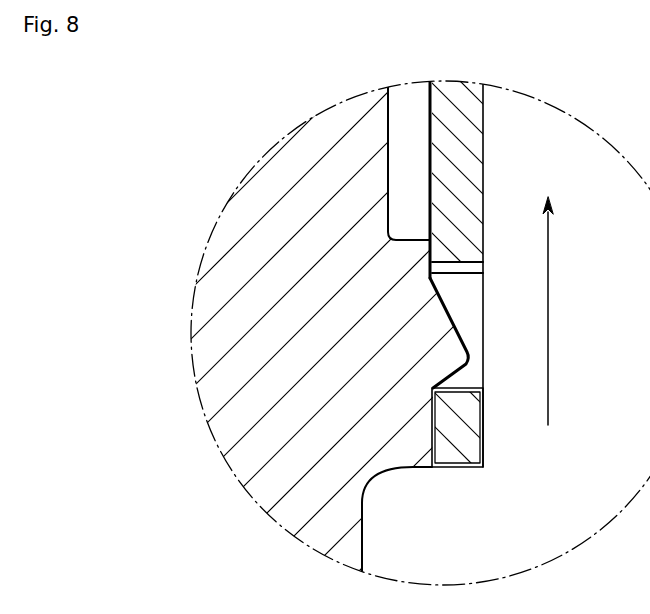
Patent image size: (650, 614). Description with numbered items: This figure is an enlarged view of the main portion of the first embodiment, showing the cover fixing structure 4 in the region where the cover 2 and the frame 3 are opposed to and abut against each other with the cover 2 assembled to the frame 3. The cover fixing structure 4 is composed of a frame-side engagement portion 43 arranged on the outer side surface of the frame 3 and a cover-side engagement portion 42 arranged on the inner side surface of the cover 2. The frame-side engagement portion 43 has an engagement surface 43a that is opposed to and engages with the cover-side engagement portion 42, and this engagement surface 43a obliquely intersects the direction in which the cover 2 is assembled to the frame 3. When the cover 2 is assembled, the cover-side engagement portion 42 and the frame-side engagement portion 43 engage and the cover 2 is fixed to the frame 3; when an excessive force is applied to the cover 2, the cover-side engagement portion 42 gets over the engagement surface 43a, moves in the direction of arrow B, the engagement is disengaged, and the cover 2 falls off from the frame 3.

The cover 2 is at (488, 167).
The frame 3 is at (368, 549).
The cover fixing structure 4 is at (448, 476).
The cover-side engagement portion 42 is at (478, 388).
The frame-side engagement portion 43 is at (452, 355).
The engagement surface 43a is at (455, 390).
The direction of arrow B is at (549, 320).